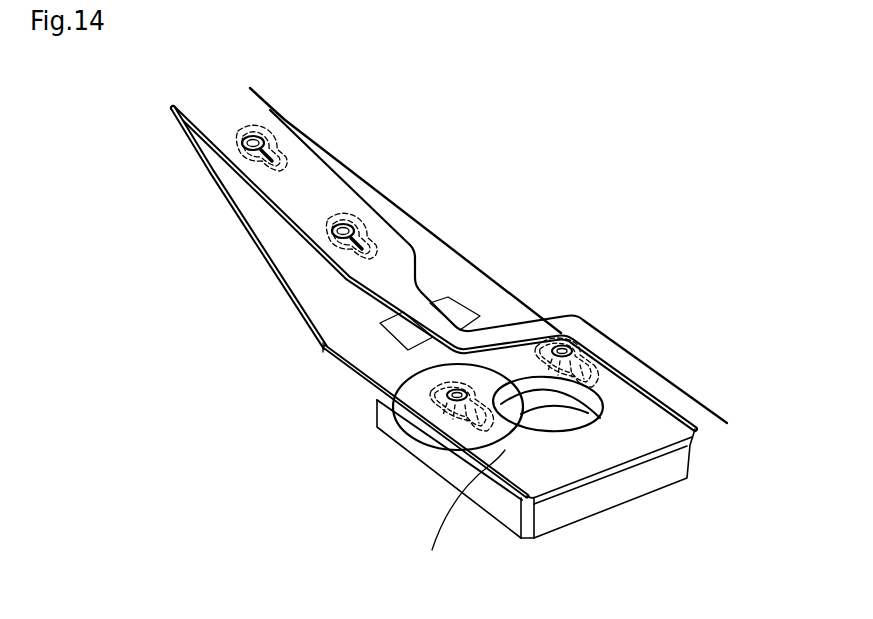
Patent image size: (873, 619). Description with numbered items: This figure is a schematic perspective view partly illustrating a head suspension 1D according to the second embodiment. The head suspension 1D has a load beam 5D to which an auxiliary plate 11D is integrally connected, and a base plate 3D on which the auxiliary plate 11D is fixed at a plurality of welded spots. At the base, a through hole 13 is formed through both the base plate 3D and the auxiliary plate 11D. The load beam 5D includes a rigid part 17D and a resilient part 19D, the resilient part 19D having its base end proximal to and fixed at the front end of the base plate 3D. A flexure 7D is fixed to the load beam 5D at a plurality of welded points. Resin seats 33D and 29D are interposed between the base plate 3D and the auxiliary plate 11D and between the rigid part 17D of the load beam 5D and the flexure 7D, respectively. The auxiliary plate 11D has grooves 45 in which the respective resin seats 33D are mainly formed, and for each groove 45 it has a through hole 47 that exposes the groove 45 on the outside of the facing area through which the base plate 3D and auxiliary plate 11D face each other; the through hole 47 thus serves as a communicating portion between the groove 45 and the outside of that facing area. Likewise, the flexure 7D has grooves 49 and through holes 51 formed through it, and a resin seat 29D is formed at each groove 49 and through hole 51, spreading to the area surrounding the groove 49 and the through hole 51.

The head suspension 1D is at (528, 108).
The base plate 3D is at (590, 505).
The load beam 5D is at (395, 201).
The flexure 7D is at (341, 175).
The auxiliary plate 11D is at (642, 417).
The through hole 13 is at (590, 418).
The rigid part 17D is at (287, 263).
The resilient part 19D is at (479, 286).
The resin seat 29D is at (262, 172).
The resin seat 33D is at (573, 340).
The groove 45 is at (585, 338).
The through hole 47 is at (578, 340).
The groove 49 is at (284, 152).
The through hole 51 is at (251, 134).